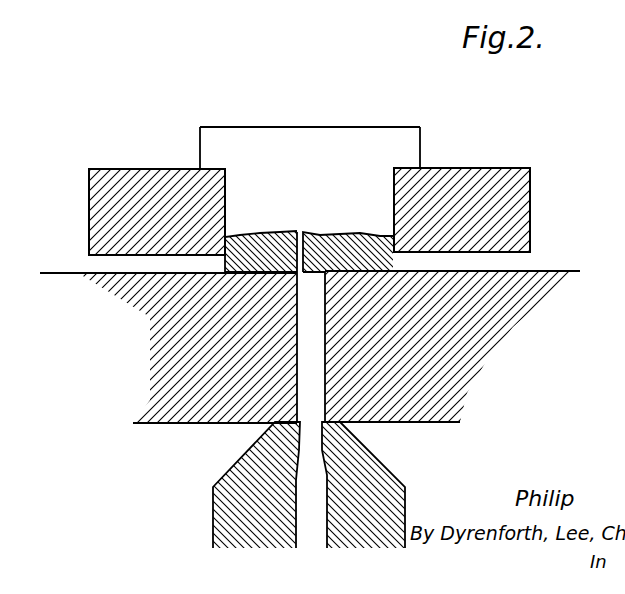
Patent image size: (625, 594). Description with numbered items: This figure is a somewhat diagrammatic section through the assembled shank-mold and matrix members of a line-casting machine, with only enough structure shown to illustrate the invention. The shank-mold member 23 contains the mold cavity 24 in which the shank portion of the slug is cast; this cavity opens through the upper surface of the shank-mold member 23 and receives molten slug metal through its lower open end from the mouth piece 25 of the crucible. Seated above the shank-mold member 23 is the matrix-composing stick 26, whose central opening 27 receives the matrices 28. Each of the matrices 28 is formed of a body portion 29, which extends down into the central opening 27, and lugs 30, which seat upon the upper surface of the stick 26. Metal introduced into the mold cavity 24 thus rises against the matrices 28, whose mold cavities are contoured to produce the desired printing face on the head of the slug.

The shank-mold member 23 is at (68, 293).
The mold cavity 24 is at (297, 352).
The mouth piece 25 is at (378, 487).
The matrix-composing stick 26 is at (88, 184).
The central opening 27 is at (394, 205).
The matrices 28 is at (296, 133).
The body portions 29 is at (261, 231).
The lugs 30 is at (200, 148).